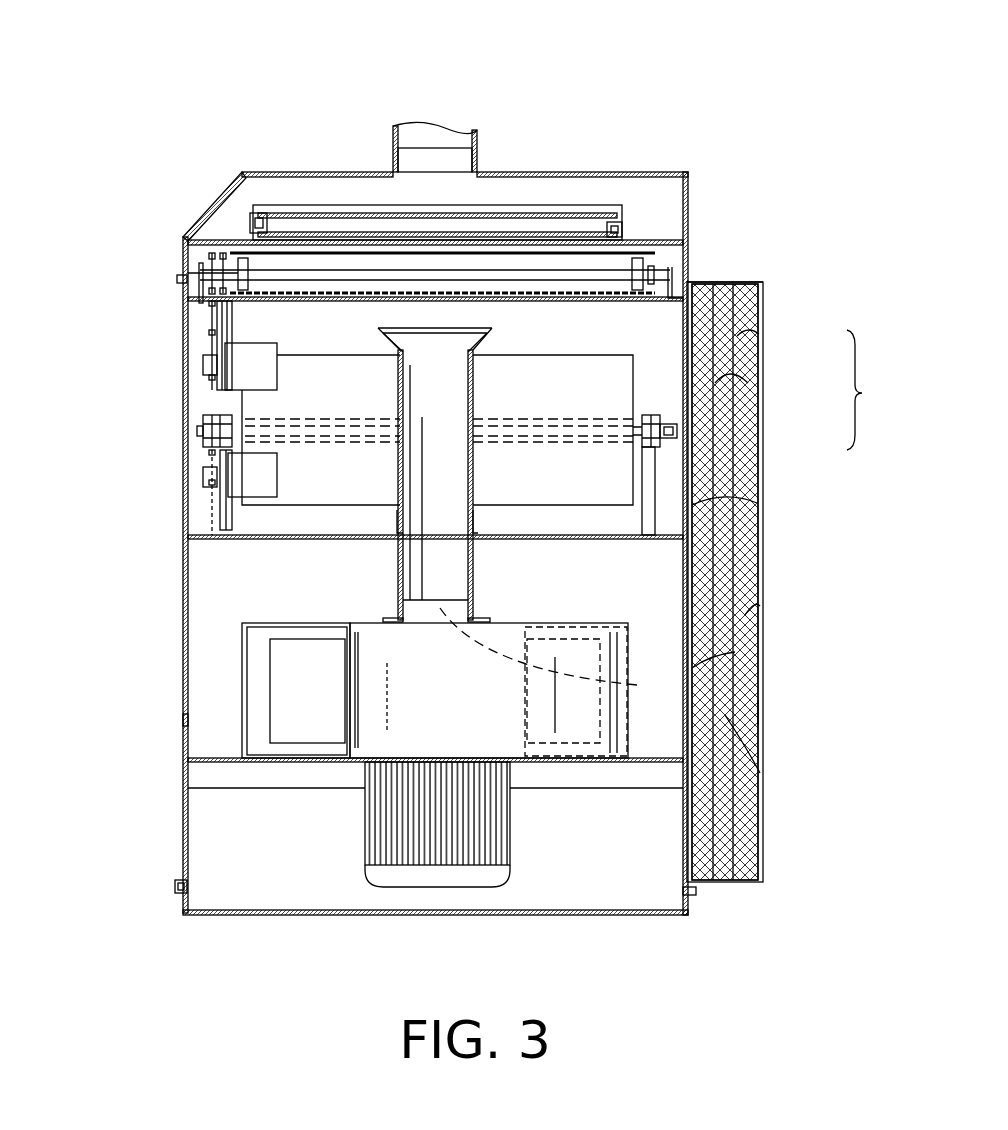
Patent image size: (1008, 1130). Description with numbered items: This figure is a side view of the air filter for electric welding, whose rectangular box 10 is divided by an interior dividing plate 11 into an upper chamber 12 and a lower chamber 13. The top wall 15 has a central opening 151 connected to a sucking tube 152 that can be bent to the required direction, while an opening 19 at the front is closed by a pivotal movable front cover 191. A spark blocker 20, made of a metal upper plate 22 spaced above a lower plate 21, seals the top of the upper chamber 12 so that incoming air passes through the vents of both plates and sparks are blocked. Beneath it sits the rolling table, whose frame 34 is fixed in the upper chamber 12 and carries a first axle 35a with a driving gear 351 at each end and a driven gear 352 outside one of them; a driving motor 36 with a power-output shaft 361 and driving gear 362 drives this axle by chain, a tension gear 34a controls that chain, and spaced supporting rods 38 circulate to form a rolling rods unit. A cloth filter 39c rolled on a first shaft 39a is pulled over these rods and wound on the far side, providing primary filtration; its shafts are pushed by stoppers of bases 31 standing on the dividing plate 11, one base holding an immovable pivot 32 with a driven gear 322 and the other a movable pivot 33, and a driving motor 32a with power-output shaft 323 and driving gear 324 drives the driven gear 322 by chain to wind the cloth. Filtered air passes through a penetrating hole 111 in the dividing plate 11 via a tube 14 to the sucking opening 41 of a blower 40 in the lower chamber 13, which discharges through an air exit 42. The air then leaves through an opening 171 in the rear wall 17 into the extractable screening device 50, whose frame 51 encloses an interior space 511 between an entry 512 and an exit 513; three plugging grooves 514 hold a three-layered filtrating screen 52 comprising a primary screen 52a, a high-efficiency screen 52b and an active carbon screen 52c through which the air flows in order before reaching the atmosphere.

The box 10 is at (695, 188).
The top wall 15 is at (522, 172).
The opening 151 is at (440, 155).
The sucking tube 152 is at (383, 124).
The spark blocker 20 is at (626, 217).
The lower plate 21 is at (338, 236).
The upper plate 22 is at (315, 214).
The supporting rods 38 is at (570, 247).
The first axle 35a is at (283, 267).
The driving gear 351 is at (200, 275).
The driven gear 352 is at (212, 257).
The frame 34 is at (200, 292).
The tension gear 34a is at (203, 315).
The upper chamber 12 is at (197, 393).
The driving motor 36 is at (253, 343).
The power-output shaft 361 is at (197, 358).
The driving gear 362 is at (210, 348).
The driven gear 322 is at (208, 443).
The immovable pivot 32 is at (207, 470).
The power-output shaft 323 is at (212, 500).
The driving gear 324 is at (215, 540).
The driving motor 32a is at (277, 490).
The first shaft 39a is at (523, 417).
The cloth filter 39c is at (603, 370).
The movable pivot 33 is at (660, 410).
The base 31 is at (645, 535).
The penetrating hole 111 is at (475, 555).
The tube 14 is at (476, 602).
The dividing plate 11 is at (347, 540).
The lower chamber 13 is at (205, 597).
The blower 40 is at (637, 742).
The sucking opening 41 is at (626, 684).
The air exit 42 is at (303, 728).
The opening 19 is at (183, 800).
The movable front cover 191 is at (183, 720).
The extractable screening device 50 is at (766, 687).
The frame 51 is at (760, 843).
The interior space 511 is at (747, 610).
The entry 512 is at (760, 773).
The exit 513 is at (762, 713).
The plugging groove 514 is at (747, 282).
The three-layered filtrating screen 52 is at (874, 390).
The primary screen 52a is at (752, 440).
The high-efficiency screen 52b is at (762, 383).
The active carbon screen 52c is at (752, 330).
The rear wall 17 is at (747, 498).
The opening 171 is at (740, 650).